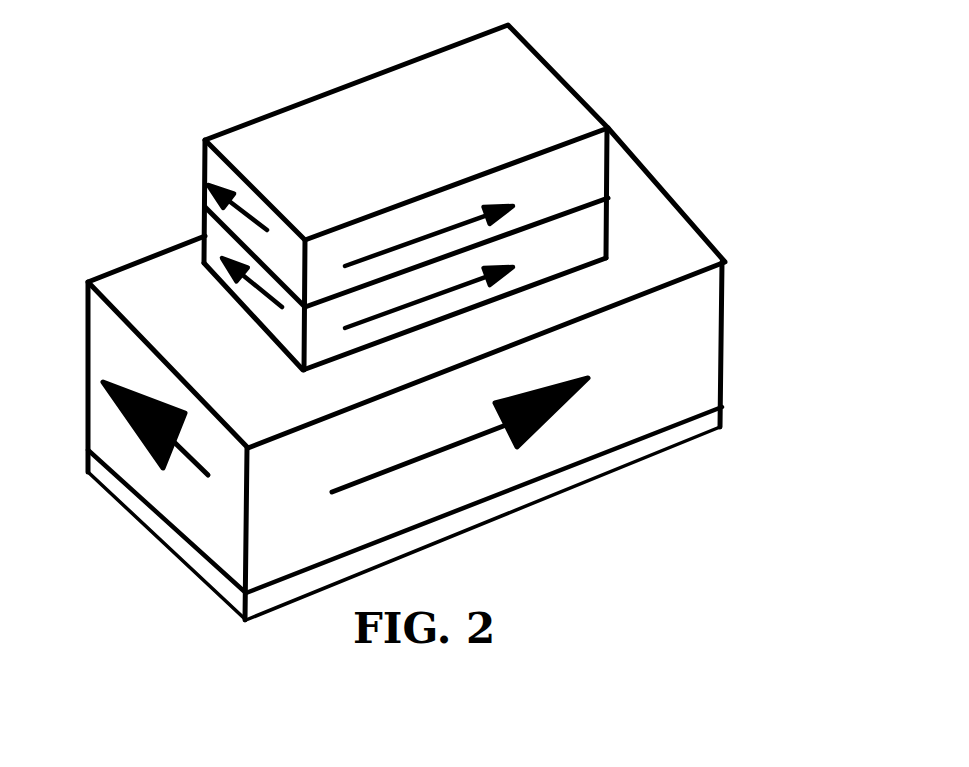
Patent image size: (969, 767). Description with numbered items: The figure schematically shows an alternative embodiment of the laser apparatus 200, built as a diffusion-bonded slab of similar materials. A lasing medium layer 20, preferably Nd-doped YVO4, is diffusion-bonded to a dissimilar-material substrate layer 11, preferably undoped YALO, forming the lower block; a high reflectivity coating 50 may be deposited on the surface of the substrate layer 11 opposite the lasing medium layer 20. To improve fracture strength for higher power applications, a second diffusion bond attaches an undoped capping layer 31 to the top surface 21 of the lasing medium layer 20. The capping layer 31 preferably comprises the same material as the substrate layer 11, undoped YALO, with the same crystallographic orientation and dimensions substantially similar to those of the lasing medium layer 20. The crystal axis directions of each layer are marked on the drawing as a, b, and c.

The laser apparatus 200 is at (382, 322).
The substrate layer 11 is at (636, 418).
The high reflectivity coating 50 is at (560, 480).
The lasing medium layer 20 is at (396, 197).
The top surface 21 is at (626, 194).
The capping layer 31 is at (209, 158).